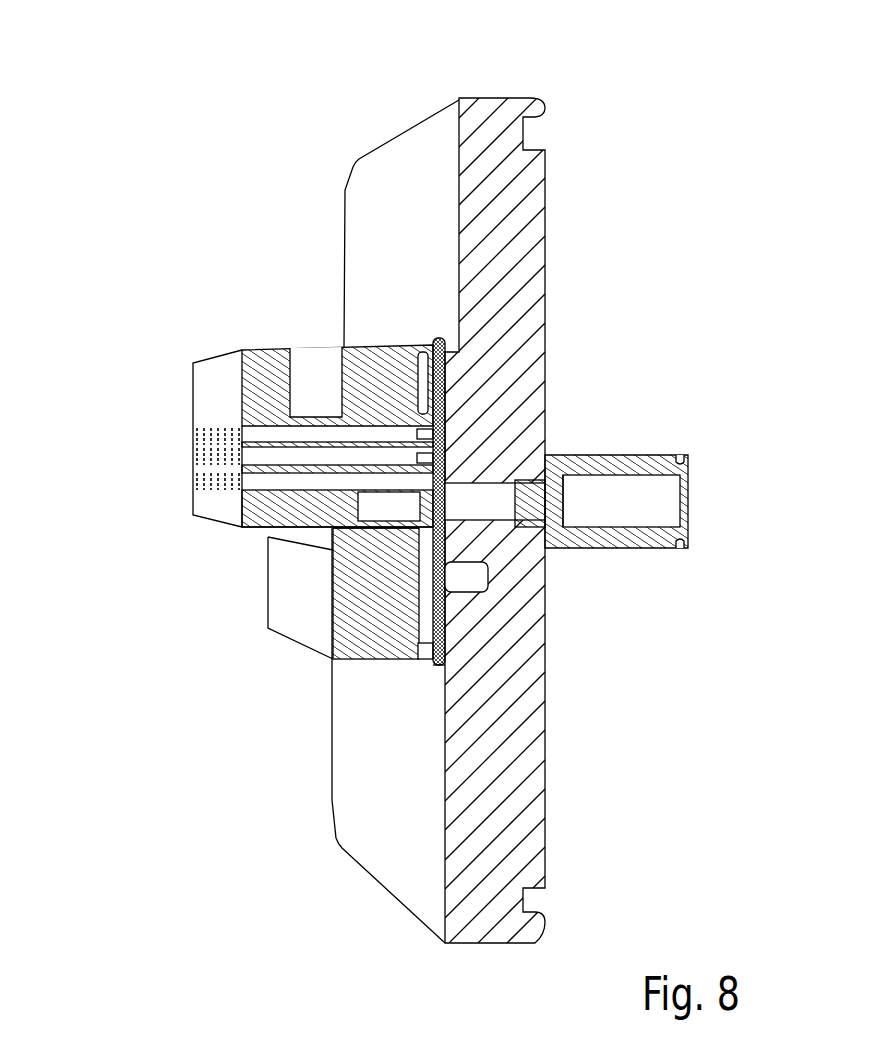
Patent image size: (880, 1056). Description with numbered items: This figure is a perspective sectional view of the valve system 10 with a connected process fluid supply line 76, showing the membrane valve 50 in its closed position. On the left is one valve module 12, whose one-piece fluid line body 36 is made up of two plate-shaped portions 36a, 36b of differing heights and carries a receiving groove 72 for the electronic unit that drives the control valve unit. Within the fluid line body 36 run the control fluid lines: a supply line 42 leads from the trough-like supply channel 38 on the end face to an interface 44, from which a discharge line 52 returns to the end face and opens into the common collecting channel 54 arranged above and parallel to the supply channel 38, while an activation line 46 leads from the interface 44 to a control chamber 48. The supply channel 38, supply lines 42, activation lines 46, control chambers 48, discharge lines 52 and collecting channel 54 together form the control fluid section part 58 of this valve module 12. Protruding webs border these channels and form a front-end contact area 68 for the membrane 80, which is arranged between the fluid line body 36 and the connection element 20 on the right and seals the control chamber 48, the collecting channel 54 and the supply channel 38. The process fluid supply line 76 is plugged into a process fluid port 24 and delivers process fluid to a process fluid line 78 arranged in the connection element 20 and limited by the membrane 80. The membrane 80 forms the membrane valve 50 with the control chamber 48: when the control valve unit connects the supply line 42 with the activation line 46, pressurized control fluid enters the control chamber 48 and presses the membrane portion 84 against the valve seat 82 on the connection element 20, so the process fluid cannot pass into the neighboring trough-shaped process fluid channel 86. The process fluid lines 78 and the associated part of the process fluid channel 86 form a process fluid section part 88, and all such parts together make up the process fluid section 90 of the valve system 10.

The valve system 10 is at (176, 100).
The valve module 12 is at (263, 300).
The connection element 20 is at (527, 212).
The process fluid port 24 is at (556, 442).
The fluid line body 36 is at (398, 598).
The plate-shaped portion 36a is at (372, 640).
The plate-shaped portion 36b is at (258, 380).
The supply channel 38 is at (440, 460).
The supply line 42 is at (242, 458).
The interface 44 is at (175, 460).
The activation line 46 is at (242, 488).
The control chamber 48 is at (420, 612).
The membrane valve 50 is at (372, 637).
The discharge line 52 is at (242, 430).
The collecting channel 54 is at (445, 430).
The control fluid section part 58 is at (420, 704).
The front-end contact area 68 is at (460, 636).
The receiving groove 72 is at (310, 368).
The process fluid supply line 76 is at (656, 462).
The process fluid line 78 is at (487, 512).
The membrane 80 is at (437, 338).
The valve seat 82 is at (425, 524).
The membrane portion 84 is at (368, 562).
The process fluid channel 86 is at (467, 578).
The process fluid section part 88 is at (600, 436).
The process fluid section 90 is at (620, 342).